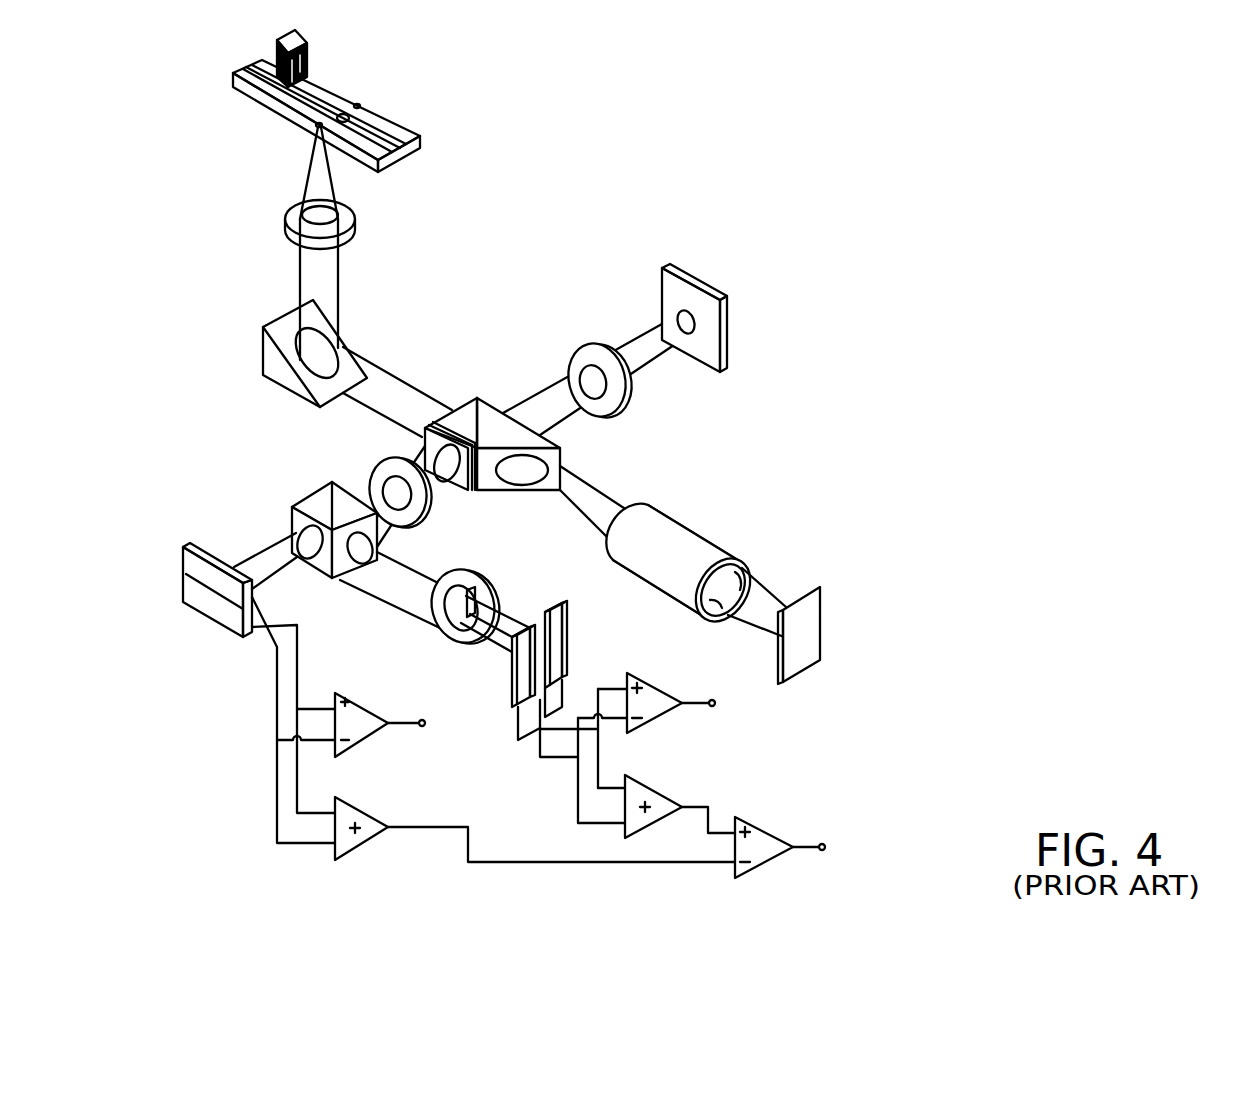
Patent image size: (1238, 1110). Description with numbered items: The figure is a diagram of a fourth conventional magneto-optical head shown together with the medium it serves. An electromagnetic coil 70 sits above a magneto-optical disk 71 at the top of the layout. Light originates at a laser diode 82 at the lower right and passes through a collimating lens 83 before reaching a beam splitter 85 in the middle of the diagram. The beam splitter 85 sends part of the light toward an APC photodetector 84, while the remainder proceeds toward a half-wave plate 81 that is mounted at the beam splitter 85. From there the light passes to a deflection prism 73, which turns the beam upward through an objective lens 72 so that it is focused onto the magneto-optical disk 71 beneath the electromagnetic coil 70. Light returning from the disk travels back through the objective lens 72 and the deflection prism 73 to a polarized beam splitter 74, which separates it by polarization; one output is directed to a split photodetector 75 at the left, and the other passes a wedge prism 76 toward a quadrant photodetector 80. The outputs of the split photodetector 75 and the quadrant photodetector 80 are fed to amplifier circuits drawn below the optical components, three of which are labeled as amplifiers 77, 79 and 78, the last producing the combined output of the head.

The electromagnetic coil 70 is at (300, 32).
The magneto-optical disk 71 is at (420, 126).
The objective lens 72 is at (290, 217).
The deflection prism 73 is at (268, 359).
The polarized beam splitter 74 is at (313, 505).
The split photodetector 75 is at (200, 568).
The wedge prism 76 is at (347, 568).
The differential amplifier 77 is at (377, 737).
The output amplifier 78 is at (770, 860).
The differential amplifier 79 is at (672, 712).
The quadrant photodetector 80 is at (563, 628).
The half-wave plate 81 is at (456, 495).
The laser diode 82 is at (812, 640).
The collimating lens 83 is at (680, 548).
The APC photodetector 84 is at (707, 334).
The beam splitter 85 is at (467, 414).